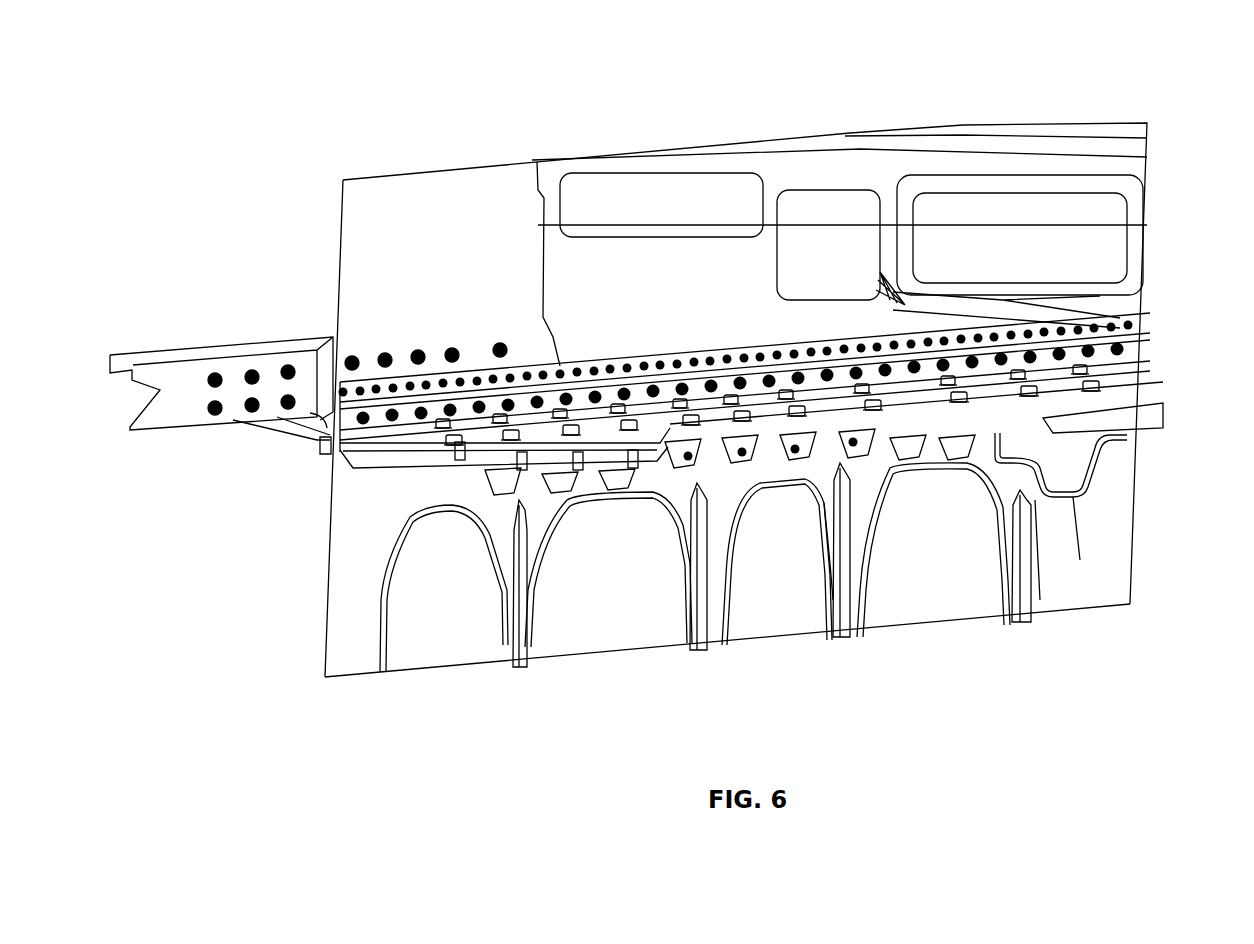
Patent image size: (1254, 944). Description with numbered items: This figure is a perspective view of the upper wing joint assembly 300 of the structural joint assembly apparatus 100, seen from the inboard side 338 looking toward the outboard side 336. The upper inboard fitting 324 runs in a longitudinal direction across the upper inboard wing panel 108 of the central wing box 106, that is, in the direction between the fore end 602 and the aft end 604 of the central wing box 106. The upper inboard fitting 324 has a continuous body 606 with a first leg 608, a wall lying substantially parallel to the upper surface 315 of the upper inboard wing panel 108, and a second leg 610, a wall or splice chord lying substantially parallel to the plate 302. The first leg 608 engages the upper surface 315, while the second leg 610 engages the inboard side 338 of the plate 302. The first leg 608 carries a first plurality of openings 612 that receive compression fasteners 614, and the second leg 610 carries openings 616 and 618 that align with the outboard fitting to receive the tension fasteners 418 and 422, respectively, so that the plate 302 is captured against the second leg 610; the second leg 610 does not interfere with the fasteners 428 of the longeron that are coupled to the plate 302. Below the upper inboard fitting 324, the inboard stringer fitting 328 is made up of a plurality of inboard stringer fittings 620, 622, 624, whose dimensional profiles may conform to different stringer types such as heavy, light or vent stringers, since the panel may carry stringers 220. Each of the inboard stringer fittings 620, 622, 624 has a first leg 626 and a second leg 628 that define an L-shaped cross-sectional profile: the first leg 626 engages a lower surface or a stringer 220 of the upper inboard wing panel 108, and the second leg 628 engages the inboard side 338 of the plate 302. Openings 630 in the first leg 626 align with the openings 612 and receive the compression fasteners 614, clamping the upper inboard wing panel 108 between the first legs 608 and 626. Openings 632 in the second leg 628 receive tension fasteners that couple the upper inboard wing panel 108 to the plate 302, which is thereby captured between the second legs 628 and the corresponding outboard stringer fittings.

The energy storage system 100 is at (275, 61).
The upper wing joint assembly 300 is at (480, 55).
The outboard side 336 is at (232, 216).
The inboard side 338 is at (1113, 719).
The fore end 602 is at (326, 650).
The plate 302 is at (355, 667).
The opening 618 is at (712, 390).
The continuous body 606 is at (757, 430).
The compression fasteners 614 is at (823, 430).
The aft end 604 is at (1133, 517).
The central wing box 106 is at (1080, 573).
The second leg 610 is at (367, 360).
The fasteners 428 is at (420, 353).
The opening 616 is at (563, 363).
The tension fastener 418 is at (1075, 380).
The tension fastener 422 is at (998, 335).
The first plurality of openings 612 is at (1035, 362).
The upper surface 315 is at (1125, 372).
The upper inboard wing panel 108 is at (1137, 407).
The stringers 220 is at (1137, 433).
The first leg 608 is at (342, 466).
The upper inboard fitting 324 is at (320, 450).
The first leg 626 is at (653, 380).
The openings 630 is at (492, 458).
The second leg 628 is at (563, 483).
The inboard stringer fitting 328 is at (520, 545).
The inboard stringer fitting 620 is at (444, 625).
The inboard stringer fitting 622 is at (775, 597).
The inboard stringer fitting 624 is at (933, 590).
The openings 632 is at (853, 540).